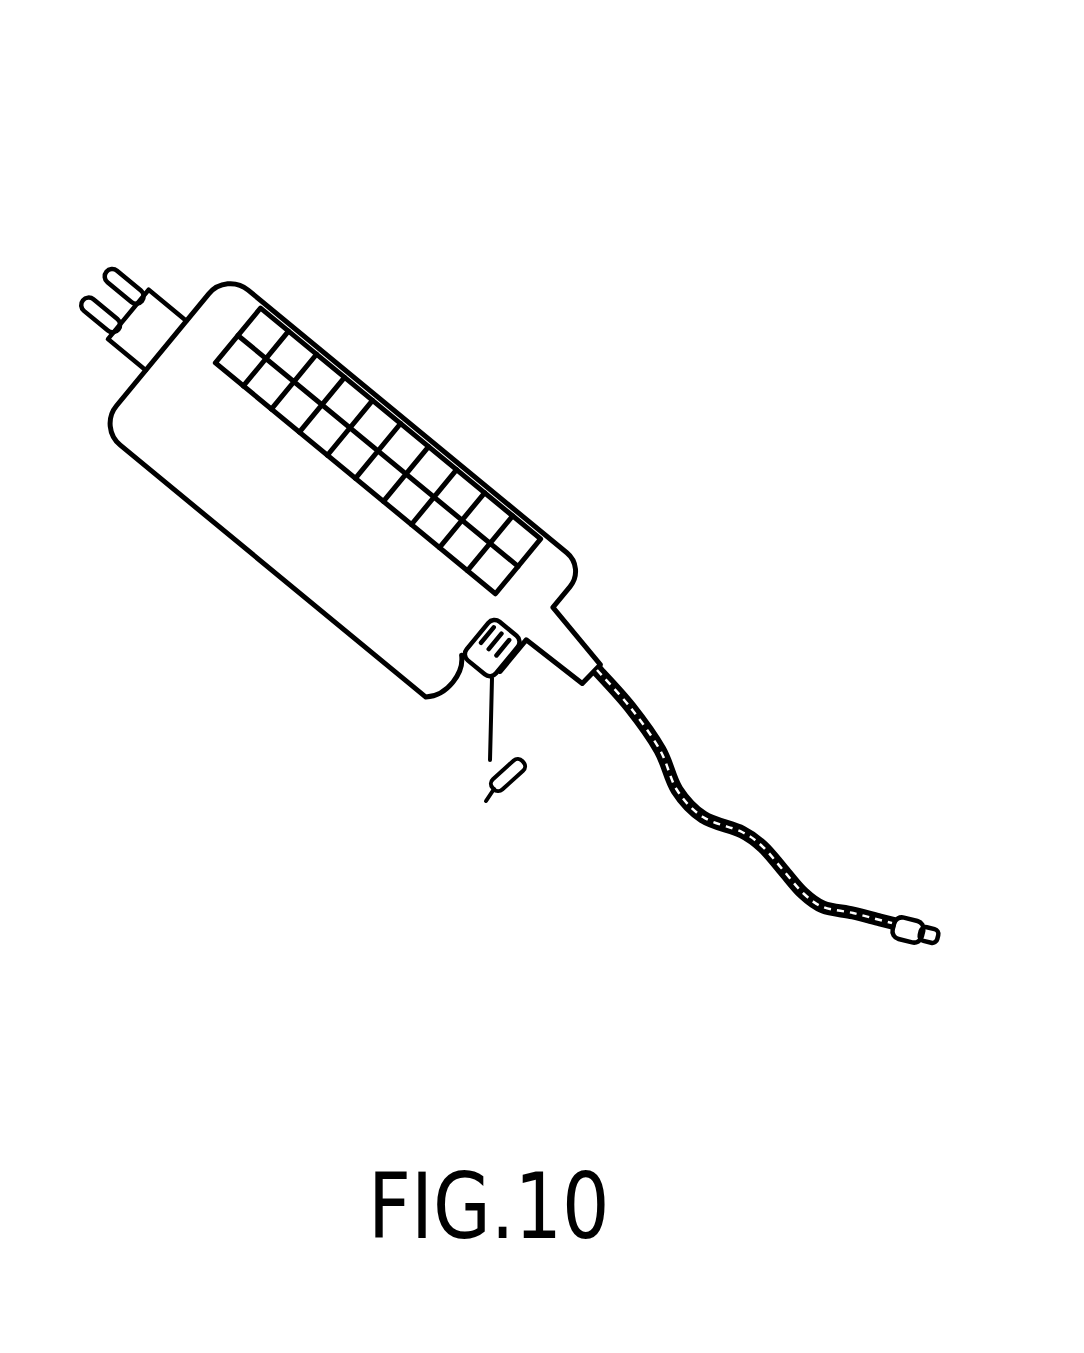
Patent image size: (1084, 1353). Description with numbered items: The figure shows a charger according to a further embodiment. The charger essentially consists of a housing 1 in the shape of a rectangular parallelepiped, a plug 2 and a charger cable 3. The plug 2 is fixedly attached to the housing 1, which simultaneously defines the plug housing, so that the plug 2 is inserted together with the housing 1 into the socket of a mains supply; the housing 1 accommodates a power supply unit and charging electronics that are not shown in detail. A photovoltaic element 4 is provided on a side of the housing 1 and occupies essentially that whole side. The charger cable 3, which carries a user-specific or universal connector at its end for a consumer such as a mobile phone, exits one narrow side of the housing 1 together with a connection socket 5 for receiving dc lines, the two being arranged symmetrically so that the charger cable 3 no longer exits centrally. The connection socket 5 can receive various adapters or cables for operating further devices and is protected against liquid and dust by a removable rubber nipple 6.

The housing 1 is at (398, 353).
The plug 2 is at (140, 263).
The charger cable 3 is at (743, 823).
The photovoltaic element 4 is at (482, 475).
The connection socket 5 is at (457, 677).
The rubber nipple 6 is at (488, 799).